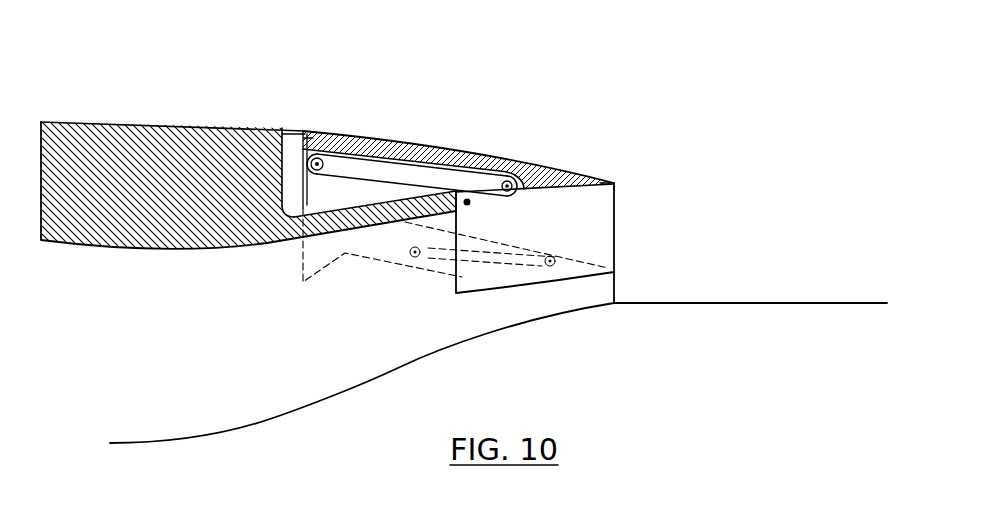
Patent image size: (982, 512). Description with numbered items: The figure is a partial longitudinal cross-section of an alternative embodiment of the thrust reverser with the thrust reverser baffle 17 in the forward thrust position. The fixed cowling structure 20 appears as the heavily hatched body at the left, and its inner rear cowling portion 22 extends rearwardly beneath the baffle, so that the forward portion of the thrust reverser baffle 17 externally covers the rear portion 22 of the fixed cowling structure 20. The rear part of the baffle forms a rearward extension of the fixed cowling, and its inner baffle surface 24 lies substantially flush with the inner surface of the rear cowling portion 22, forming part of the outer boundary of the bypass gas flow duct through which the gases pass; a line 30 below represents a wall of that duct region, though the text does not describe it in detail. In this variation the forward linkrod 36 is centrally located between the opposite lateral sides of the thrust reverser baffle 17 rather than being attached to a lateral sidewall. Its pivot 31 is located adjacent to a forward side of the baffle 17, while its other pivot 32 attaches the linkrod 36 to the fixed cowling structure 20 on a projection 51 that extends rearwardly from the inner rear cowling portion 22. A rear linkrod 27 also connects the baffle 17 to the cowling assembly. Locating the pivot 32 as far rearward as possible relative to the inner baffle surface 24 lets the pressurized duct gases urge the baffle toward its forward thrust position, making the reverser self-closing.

The thrust reverser baffle 17 is at (555, 177).
The fixed cowling structure 20 is at (165, 160).
The rear portion of the fixed cowling structure 22 is at (346, 221).
The inner baffle surface 24 is at (598, 193).
The rear linkrod 27 is at (487, 260).
The duct wall 30 is at (778, 325).
The pivot 31 is at (317, 158).
The pivot 32 is at (522, 165).
The forward linkrod 36 is at (397, 172).
The projection 51 is at (467, 203).